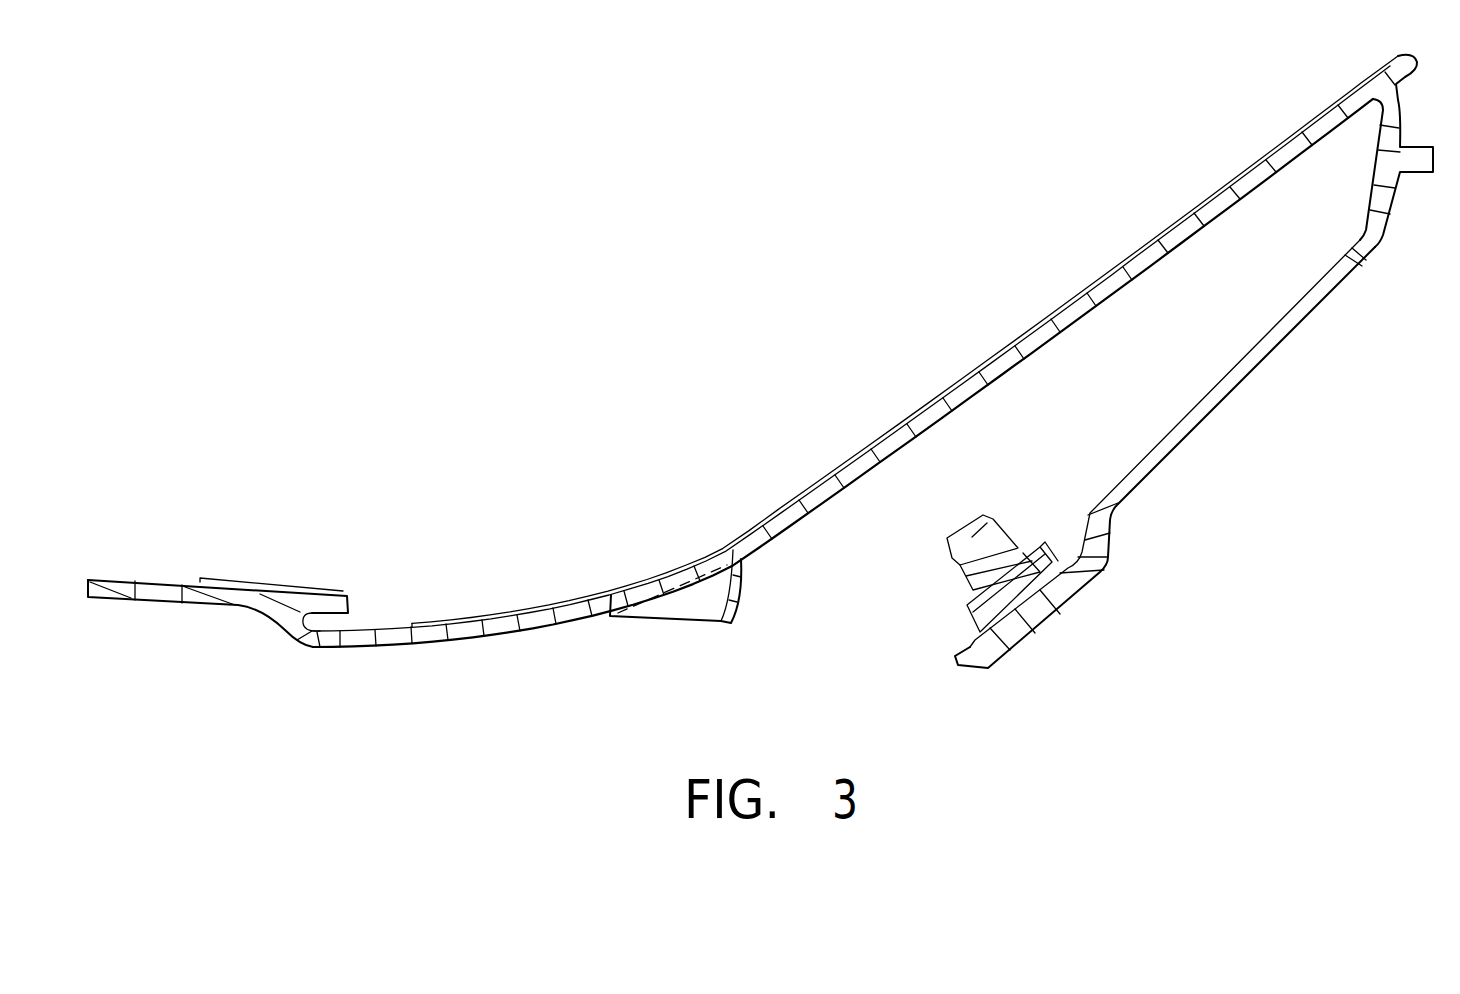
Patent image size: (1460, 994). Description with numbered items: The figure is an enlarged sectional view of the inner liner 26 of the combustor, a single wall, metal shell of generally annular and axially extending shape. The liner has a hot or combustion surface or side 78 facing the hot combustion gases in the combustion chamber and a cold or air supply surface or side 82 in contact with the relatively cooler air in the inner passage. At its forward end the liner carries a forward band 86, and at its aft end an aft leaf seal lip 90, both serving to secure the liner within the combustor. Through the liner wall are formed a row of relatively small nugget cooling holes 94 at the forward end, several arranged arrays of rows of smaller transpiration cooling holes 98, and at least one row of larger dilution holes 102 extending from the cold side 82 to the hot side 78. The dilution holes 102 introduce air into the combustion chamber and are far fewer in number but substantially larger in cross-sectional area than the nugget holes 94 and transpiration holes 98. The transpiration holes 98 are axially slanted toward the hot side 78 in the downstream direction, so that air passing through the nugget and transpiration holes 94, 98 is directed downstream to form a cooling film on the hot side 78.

The inner liner 26 is at (638, 296).
The hot surface 78 is at (452, 622).
The cold surface 82 is at (455, 648).
The forward band 86 is at (237, 608).
The aft leaf seal lip 90 is at (1401, 100).
The nugget cooling holes 94 is at (313, 665).
The transpiration cooling holes 98 is at (1033, 314).
The dilution holes 102 is at (998, 381).